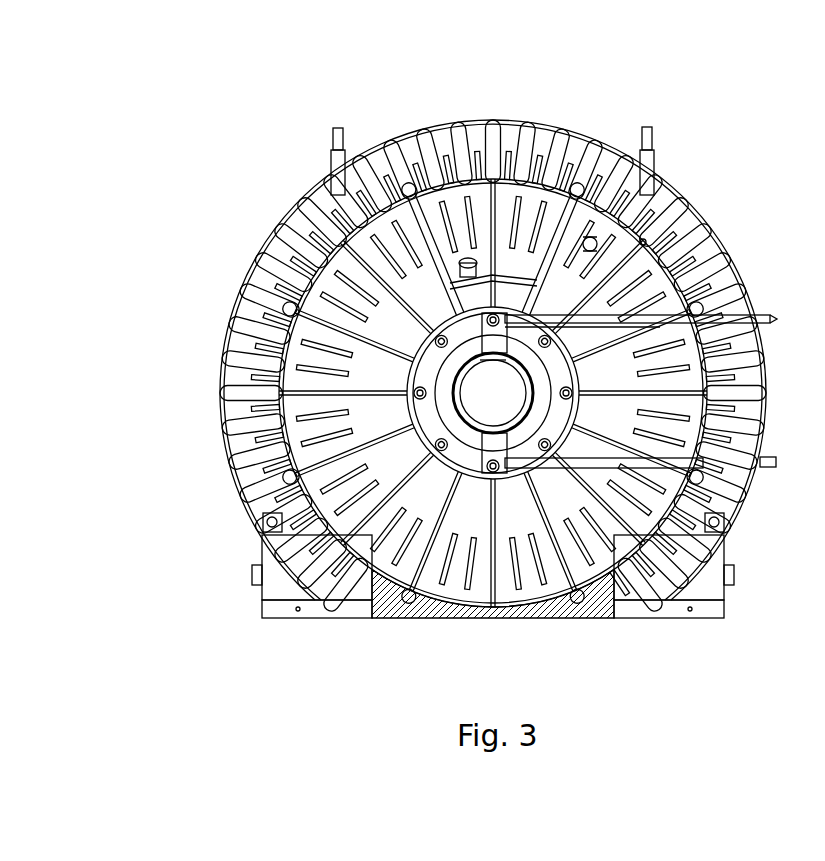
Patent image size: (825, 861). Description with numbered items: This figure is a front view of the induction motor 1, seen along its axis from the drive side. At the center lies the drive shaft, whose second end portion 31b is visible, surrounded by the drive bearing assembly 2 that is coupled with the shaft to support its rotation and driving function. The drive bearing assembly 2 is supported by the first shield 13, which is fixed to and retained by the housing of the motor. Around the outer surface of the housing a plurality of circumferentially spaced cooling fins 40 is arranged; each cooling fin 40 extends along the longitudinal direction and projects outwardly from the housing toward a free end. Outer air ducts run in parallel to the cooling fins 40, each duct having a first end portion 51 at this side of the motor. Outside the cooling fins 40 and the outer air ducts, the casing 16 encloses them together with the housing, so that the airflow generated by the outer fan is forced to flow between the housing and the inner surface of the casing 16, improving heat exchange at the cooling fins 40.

The induction motor 1 is at (722, 153).
The drive bearing assembly 2 is at (310, 267).
The first shield 13 is at (313, 432).
The casing 16 is at (750, 314).
The second end portion 31b is at (493, 397).
The cooling fins 40 is at (350, 192).
The first end portion 51 is at (449, 360).